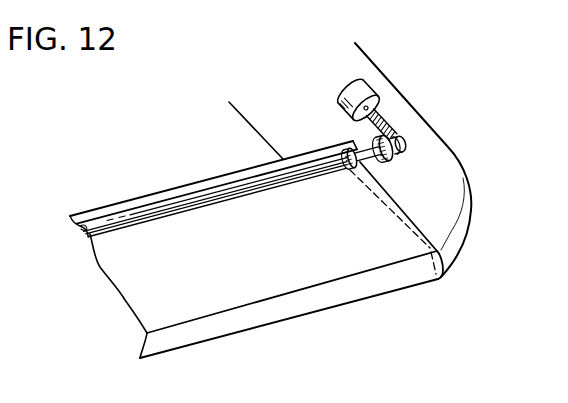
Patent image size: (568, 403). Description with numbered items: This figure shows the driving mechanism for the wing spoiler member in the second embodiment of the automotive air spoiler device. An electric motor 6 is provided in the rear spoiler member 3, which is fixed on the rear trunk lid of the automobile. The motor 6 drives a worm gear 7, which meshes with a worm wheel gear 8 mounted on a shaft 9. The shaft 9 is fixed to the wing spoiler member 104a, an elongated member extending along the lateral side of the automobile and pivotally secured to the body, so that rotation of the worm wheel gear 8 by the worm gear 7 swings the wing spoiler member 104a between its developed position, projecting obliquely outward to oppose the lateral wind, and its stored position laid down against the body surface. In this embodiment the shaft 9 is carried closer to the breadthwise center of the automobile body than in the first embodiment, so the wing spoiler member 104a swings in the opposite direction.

The rear spoiler member 3 is at (435, 152).
The electric motor 6 is at (358, 88).
The worm gear 7 is at (384, 118).
The worm wheel gear 8 is at (393, 157).
The shaft 9 is at (110, 233).
The wing spoiler member 104a is at (143, 296).